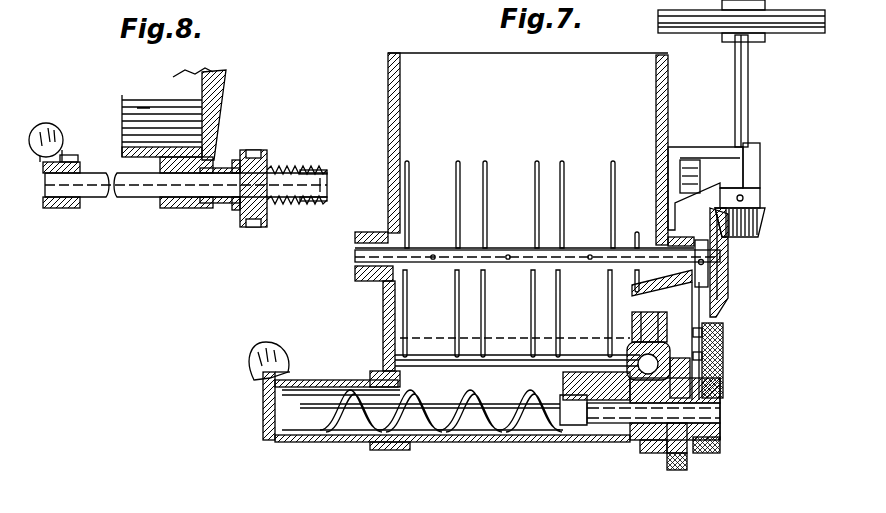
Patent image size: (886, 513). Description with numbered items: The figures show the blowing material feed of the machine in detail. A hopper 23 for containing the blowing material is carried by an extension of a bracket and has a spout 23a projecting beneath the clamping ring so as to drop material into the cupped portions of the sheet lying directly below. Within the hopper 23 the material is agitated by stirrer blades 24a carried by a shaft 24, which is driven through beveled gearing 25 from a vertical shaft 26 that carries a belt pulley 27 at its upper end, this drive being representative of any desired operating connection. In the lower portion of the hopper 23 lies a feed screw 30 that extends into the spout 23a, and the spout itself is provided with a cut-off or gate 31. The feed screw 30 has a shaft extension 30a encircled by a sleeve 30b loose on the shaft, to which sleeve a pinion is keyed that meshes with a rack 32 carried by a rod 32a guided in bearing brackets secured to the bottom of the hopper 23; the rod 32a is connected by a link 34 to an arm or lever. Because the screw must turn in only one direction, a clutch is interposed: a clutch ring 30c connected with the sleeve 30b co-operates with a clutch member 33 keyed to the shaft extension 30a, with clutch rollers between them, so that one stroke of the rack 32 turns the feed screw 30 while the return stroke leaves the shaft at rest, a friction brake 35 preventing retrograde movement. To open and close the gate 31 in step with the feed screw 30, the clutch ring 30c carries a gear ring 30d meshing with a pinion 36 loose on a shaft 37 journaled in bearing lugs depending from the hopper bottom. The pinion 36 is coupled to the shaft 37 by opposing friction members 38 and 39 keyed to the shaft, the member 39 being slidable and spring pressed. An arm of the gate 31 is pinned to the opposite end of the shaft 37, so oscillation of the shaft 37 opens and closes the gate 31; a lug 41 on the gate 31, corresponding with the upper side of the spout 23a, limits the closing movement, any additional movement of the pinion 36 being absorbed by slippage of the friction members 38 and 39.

In FIG. 7, the hopper 23 is at (557, 220).
In FIG. 8, the hopper 23 is at (200, 80).
In FIG. 7, the spout 23a is at (338, 443).
In FIG. 7, the shaft 24 is at (580, 252).
In FIG. 7, the stirrer blades 24a is at (612, 212).
In FIG. 7, the beveled gearing 25 is at (733, 230).
In FIG. 7, the shaft 26 is at (742, 106).
In FIG. 7, the pulley 27 is at (712, 30).
In FIG. 7, the feed screw 30 is at (462, 443).
In FIG. 7, the shaft extension 30a is at (610, 424).
In FIG. 7, the sleeve 30b is at (637, 441).
In FIG. 7, the clutch ring 30c is at (672, 452).
In FIG. 7, the gear ring 30d is at (684, 470).
In FIG. 7, the gate 31 is at (262, 420).
In FIG. 8, the gate 31 is at (50, 212).
In FIG. 7, the rack 32 is at (650, 356).
In FIG. 7, the rod 32a is at (652, 368).
In FIG. 7, the clutch member 33 is at (640, 330).
In FIG. 7, the link 34 is at (704, 455).
In FIG. 7, the friction brake 35 is at (723, 370).
In FIG. 8, the pinion 36 is at (256, 228).
In FIG. 8, the shaft 37 is at (125, 186).
In FIG. 8, the friction member 38 is at (238, 166).
In FIG. 8, the friction member 39 is at (277, 171).
In FIG. 7, the lug 41 is at (290, 370).
In FIG. 8, the lug 41 is at (62, 150).